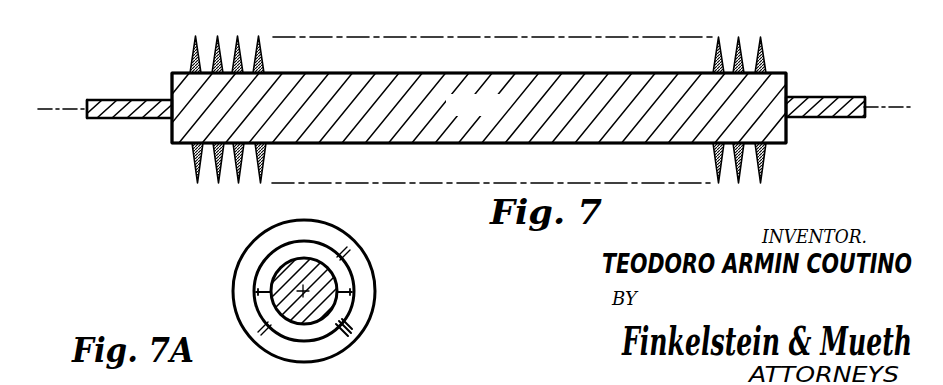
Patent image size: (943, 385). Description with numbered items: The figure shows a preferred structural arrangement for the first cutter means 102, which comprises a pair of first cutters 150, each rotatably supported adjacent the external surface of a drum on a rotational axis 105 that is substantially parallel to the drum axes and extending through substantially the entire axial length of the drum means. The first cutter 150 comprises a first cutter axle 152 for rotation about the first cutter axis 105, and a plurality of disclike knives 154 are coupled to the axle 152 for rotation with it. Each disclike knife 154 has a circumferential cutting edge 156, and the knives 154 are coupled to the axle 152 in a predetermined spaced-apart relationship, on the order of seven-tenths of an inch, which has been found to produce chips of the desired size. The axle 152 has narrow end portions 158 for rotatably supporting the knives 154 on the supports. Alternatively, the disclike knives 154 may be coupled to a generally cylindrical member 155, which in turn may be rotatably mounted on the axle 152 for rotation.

In FIG. 7, the first cutter means 102 is at (847, 53).
In FIG. 7, the rotational axis 105 is at (57, 108).
In FIG. 7A, the rotational axis 105 is at (328, 272).
In FIG. 7, the first cutter 150 is at (838, 176).
In FIG. 7A, the first cutter 150 is at (441, 313).
In FIG. 7, the first cutter axle 152 is at (822, 97).
In FIG. 7, the disclike knives 154 is at (332, 24).
In FIG. 7A, the disclike knives 154 is at (347, 247).
In FIG. 7, the generally cylindrical member 155 is at (496, 118).
In FIG. 7A, the generally cylindrical member 155 is at (275, 272).
In FIG. 7, the circumferential cutting edge 156 is at (196, 38).
In FIG. 7A, the circumferential cutting edge 156 is at (259, 238).
In FIG. 7, the narrow end portion 158 is at (153, 121).